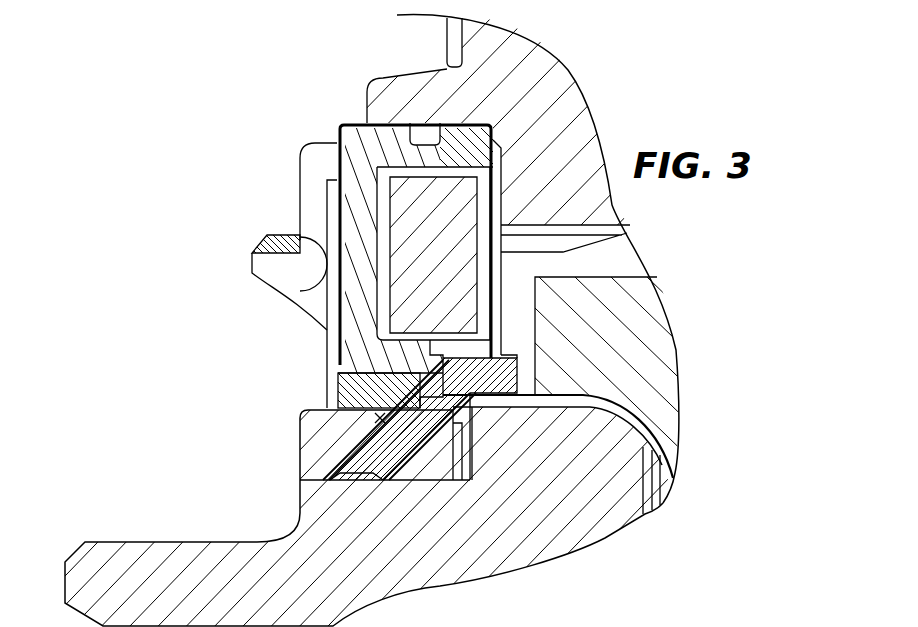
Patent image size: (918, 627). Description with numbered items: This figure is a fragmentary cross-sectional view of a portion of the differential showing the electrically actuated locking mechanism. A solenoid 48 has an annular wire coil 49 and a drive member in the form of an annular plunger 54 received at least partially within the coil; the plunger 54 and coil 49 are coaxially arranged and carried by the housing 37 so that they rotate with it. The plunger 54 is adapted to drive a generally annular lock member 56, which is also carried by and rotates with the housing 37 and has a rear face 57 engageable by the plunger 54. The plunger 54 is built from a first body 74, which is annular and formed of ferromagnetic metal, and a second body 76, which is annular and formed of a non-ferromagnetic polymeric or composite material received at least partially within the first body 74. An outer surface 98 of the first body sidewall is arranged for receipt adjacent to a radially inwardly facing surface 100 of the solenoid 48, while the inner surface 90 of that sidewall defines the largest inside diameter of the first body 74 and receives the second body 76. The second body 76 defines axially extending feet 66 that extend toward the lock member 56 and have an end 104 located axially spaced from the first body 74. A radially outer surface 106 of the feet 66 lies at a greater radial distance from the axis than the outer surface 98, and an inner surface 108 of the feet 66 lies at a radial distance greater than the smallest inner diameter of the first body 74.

The housing 37 is at (540, 57).
The solenoid 48 is at (334, 142).
The annular wire coil 49 is at (407, 193).
The plunger 54 is at (290, 423).
The lock member 56 is at (647, 301).
The rear face 57 is at (535, 293).
The feet 66 is at (525, 370).
The first body 74 is at (347, 398).
The second body 76 is at (313, 461).
The inner surface 90 is at (385, 435).
The outer surface 98 is at (358, 363).
The radially inwardly facing surface 100 is at (372, 348).
The end 104 is at (531, 390).
The radially outer surface 106 is at (513, 358).
The inner surface 108 is at (510, 398).